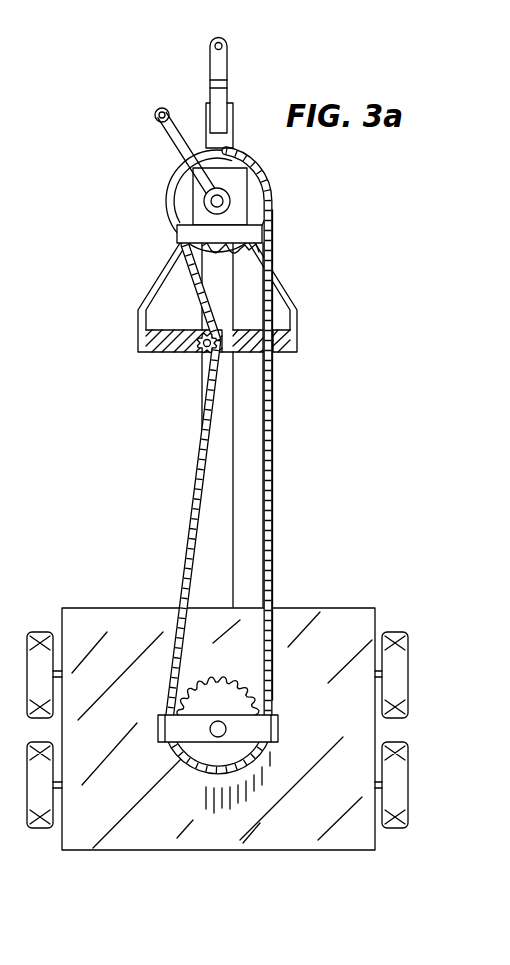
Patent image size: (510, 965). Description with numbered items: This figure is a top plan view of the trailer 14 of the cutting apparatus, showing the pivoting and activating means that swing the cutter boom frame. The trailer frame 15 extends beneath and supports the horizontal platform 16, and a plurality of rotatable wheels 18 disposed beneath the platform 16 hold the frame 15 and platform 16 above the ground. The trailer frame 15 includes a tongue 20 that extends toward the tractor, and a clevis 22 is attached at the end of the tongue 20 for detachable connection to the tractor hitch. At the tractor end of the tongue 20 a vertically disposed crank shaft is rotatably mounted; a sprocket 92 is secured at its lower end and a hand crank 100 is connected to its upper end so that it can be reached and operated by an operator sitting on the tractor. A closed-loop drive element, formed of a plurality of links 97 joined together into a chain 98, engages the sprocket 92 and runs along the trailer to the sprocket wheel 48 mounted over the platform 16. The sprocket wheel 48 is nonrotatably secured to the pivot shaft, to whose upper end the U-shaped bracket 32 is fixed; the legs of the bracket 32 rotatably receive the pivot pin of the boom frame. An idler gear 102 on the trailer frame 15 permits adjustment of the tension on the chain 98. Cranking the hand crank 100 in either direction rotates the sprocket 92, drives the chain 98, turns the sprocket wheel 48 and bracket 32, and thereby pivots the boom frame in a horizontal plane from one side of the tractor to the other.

The trailer 14 is at (285, 280).
The trailer frame 15 is at (166, 338).
The horizontal platform 16 is at (328, 617).
The rotatable wheels 18 is at (402, 673).
The tongue 20 is at (225, 442).
The clevis 22 is at (217, 75).
The U-shaped bracket 32 is at (185, 735).
The sprocket wheel 48 is at (240, 688).
The sprocket 92 is at (266, 185).
The links 97 is at (272, 238).
The chain 98 is at (270, 475).
The hand crank 100 is at (160, 121).
The idler gear 102 is at (205, 350).